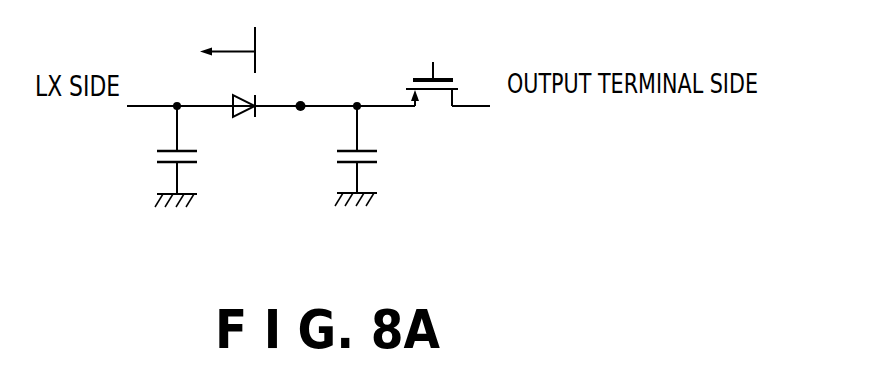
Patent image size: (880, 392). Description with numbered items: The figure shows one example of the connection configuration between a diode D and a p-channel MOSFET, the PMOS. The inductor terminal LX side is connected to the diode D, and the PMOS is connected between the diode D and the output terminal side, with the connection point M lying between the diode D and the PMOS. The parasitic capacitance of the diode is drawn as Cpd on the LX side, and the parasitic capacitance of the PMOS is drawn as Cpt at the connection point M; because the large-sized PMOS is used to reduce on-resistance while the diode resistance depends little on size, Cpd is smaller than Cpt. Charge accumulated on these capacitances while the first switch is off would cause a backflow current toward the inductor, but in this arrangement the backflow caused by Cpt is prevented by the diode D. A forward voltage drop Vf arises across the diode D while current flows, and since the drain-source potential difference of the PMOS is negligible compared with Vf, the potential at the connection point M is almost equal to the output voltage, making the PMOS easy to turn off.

The diode D is at (244, 123).
The forward voltage drop Vf is at (227, 45).
The connection point M is at (301, 101).
The parasitic capacitance of the diode Cpd is at (150, 156).
The parasitic capacitance of the PMOS Cpt is at (380, 156).
The p-channel MOSFET PMOS is at (439, 69).